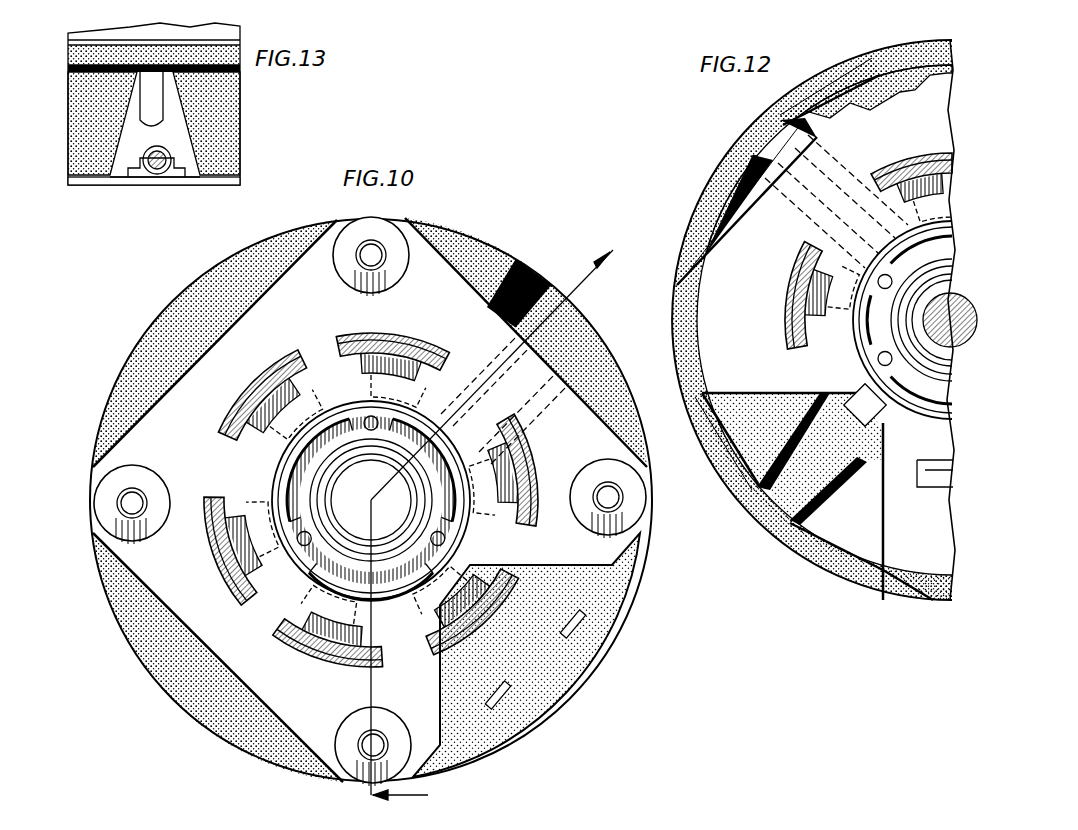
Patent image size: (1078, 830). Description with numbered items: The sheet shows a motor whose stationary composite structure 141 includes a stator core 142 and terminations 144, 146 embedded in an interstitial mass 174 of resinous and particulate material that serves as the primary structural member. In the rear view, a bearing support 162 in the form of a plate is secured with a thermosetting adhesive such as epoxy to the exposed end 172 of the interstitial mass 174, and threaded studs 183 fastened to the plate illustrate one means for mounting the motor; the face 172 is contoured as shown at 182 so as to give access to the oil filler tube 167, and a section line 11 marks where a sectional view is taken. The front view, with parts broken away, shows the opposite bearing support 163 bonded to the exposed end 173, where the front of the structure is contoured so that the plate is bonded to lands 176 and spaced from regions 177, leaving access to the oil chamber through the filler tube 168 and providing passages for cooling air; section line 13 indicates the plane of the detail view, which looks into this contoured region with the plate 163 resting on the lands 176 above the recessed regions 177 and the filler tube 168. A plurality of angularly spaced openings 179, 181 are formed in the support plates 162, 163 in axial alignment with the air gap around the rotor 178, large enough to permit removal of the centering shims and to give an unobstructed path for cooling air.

In FIG. 10, the section line 11— 11 is at (600, 272).
In FIG. 12, the section line 13— 13 is at (782, 97).
In FIG. 10, the stationary composite structure 141 is at (321, 0).
In FIG. 10, the stator core 142 is at (490, 0).
In FIG. 10, the termination 144 is at (500, 700).
In FIG. 10, the termination 146 is at (570, 630).
In FIG. 10, the bearing support 162 is at (96, 472).
In FIG. 13, the bearing support 163 is at (117, 185).
In FIG. 12, the bearing support 163 is at (692, 326).
In FIG. 10, the filler tube 167 is at (458, 385).
In FIG. 13, the filler tube 168 is at (168, 150).
In FIG. 12, the filler tube 168 is at (792, 228).
In FIG. 10, the exposed end 172 is at (470, 252).
In FIG. 12, the exposed end 173 is at (862, 62).
In FIG. 10, the interstitial mass 174 is at (245, 250).
In FIG. 12, the interstitial mass 174 is at (695, 203).
In FIG. 13, the lands 176 is at (75, 162).
In FIG. 12, the lands 176 is at (936, 52).
In FIG. 13, the regions 177 is at (155, 65).
In FIG. 12, the regions 177 is at (722, 168).
In FIG. 13, the rotor 178 is at (152, 112).
In FIG. 10, the openings 179 is at (421, 336).
In FIG. 12, the openings 181 is at (915, 162).
In FIG. 10, the contour 182 is at (530, 272).
In FIG. 10, the threaded studs 183 is at (362, 258).